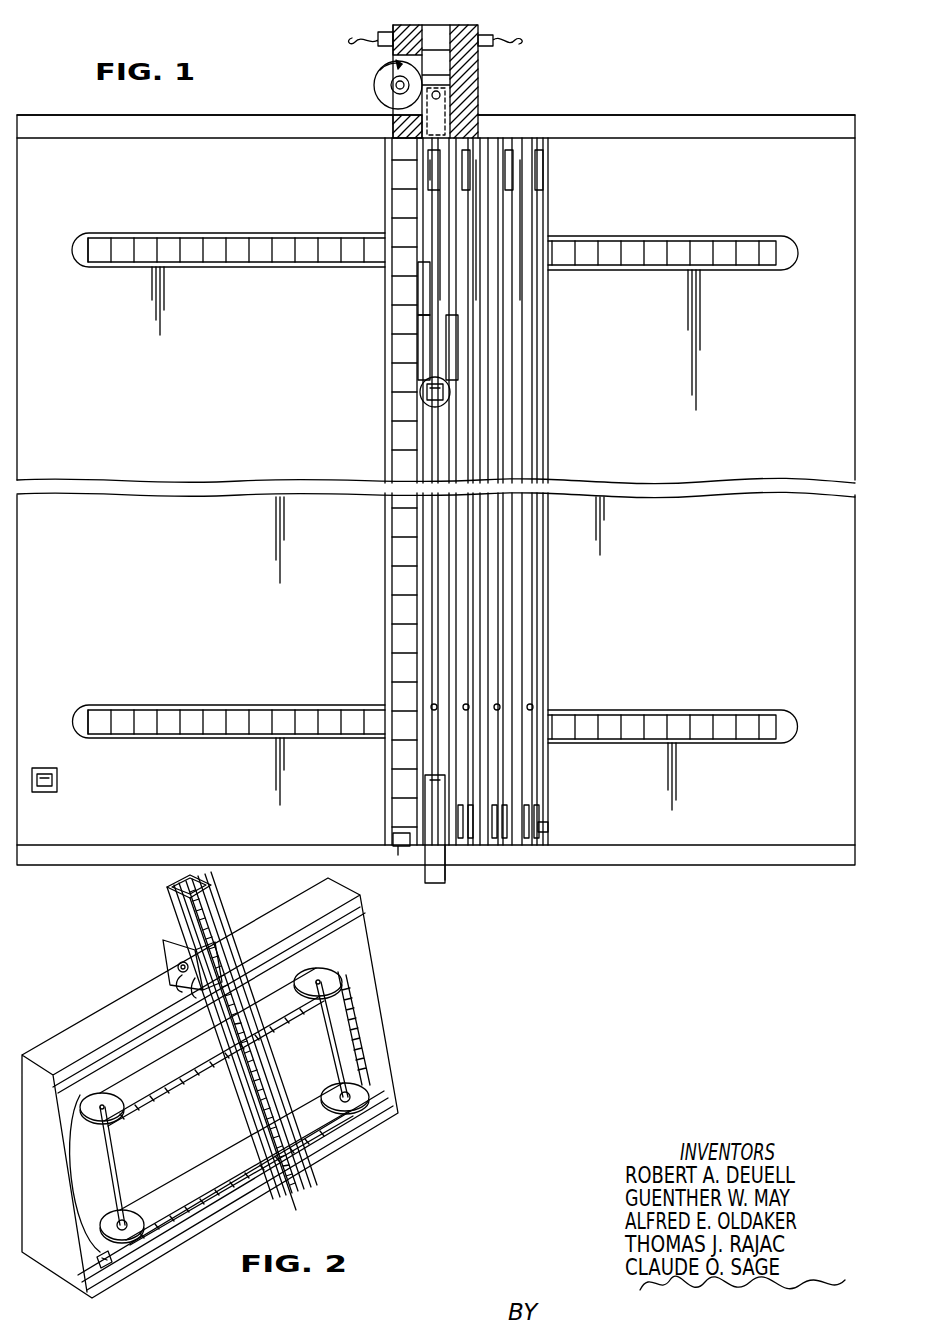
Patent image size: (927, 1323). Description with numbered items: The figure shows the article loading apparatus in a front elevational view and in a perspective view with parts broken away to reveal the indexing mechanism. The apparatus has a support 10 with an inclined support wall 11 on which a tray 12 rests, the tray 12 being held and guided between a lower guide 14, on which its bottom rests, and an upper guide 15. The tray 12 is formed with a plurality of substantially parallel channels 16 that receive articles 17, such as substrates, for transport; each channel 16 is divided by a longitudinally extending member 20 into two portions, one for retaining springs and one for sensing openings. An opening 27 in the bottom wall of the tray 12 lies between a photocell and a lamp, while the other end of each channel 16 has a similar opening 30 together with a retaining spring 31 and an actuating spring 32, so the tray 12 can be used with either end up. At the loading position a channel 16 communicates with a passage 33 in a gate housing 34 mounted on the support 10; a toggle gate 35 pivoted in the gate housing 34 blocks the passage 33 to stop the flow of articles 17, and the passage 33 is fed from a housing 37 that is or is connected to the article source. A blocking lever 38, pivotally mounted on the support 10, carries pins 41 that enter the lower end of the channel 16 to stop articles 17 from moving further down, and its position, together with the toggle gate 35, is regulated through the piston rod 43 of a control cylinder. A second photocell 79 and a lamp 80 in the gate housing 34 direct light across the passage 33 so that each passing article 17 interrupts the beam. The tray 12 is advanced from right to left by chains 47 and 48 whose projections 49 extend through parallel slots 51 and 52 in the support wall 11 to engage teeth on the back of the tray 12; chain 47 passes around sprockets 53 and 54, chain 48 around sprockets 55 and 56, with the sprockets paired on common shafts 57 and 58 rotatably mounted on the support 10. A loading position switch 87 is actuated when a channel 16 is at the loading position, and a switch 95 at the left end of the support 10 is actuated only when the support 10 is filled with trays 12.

In FIG. 1, the support 10 is at (786, 885).
In FIG. 2, the support 10 is at (395, 972).
In FIG. 1, the inclined support wall 11 is at (140, 554).
In FIG. 2, the inclined support wall 11 is at (372, 1028).
In FIG. 1, the tray 12 is at (373, 358).
In FIG. 2, the tray 12 is at (283, 1083).
In FIG. 2, the lower guide 14 is at (388, 1128).
In FIG. 1, the upper guide 15 is at (678, 117).
In FIG. 2, the upper guide 15 is at (355, 897).
In FIG. 1, the channel 16 is at (540, 380).
In FIG. 1, the article 17 is at (445, 65).
In FIG. 2, the article 17 is at (232, 1088).
In FIG. 1, the longitudinally extending member 20 is at (405, 850).
In FIG. 1, the opening 27 is at (530, 180).
In FIG. 1, the opening 30 is at (548, 826).
In FIG. 1, the retaining spring 31 is at (540, 820).
In FIG. 1, the actuating spring 32 is at (540, 700).
In FIG. 1, the passage 33 is at (462, 100).
In FIG. 1, the gate housing 34 is at (527, 75).
In FIG. 2, the gate housing 34 is at (158, 925).
In FIG. 1, the toggle gate 35 is at (374, 90).
In FIG. 2, the toggle gate 35 is at (188, 985).
In FIG. 2, the housing 37 is at (212, 912).
In FIG. 1, the blocking lever 38 is at (450, 883).
In FIG. 1, the pins 41 is at (425, 792).
In FIG. 1, the piston rod 43 is at (393, 128).
In FIG. 1, the chain 47 is at (596, 226).
In FIG. 2, the chain 47 is at (150, 1120).
In FIG. 1, the chain 48 is at (634, 696).
In FIG. 2, the chain 48 is at (205, 1182).
In FIG. 1, the projections 49 is at (240, 246).
In FIG. 1, the slot 51 is at (78, 238).
In FIG. 1, the slot 52 is at (78, 708).
In FIG. 2, the sprocket 53 is at (98, 1110).
In FIG. 2, the sprocket 54 is at (314, 972).
In FIG. 2, the sprocket 55 is at (100, 1228).
In FIG. 2, the sprocket 56 is at (352, 1100).
In FIG. 2, the shaft 57 is at (114, 1185).
In FIG. 2, the shaft 58 is at (325, 1038).
In FIG. 1, the second photocell 79 is at (378, 44).
In FIG. 2, the second photocell 79 is at (177, 966).
In FIG. 1, the lamp 80 is at (493, 44).
In FIG. 1, the loading position switch 87 is at (420, 397).
In FIG. 1, the switch 95 is at (57, 783).
In FIG. 2, the switch 95 is at (105, 1262).